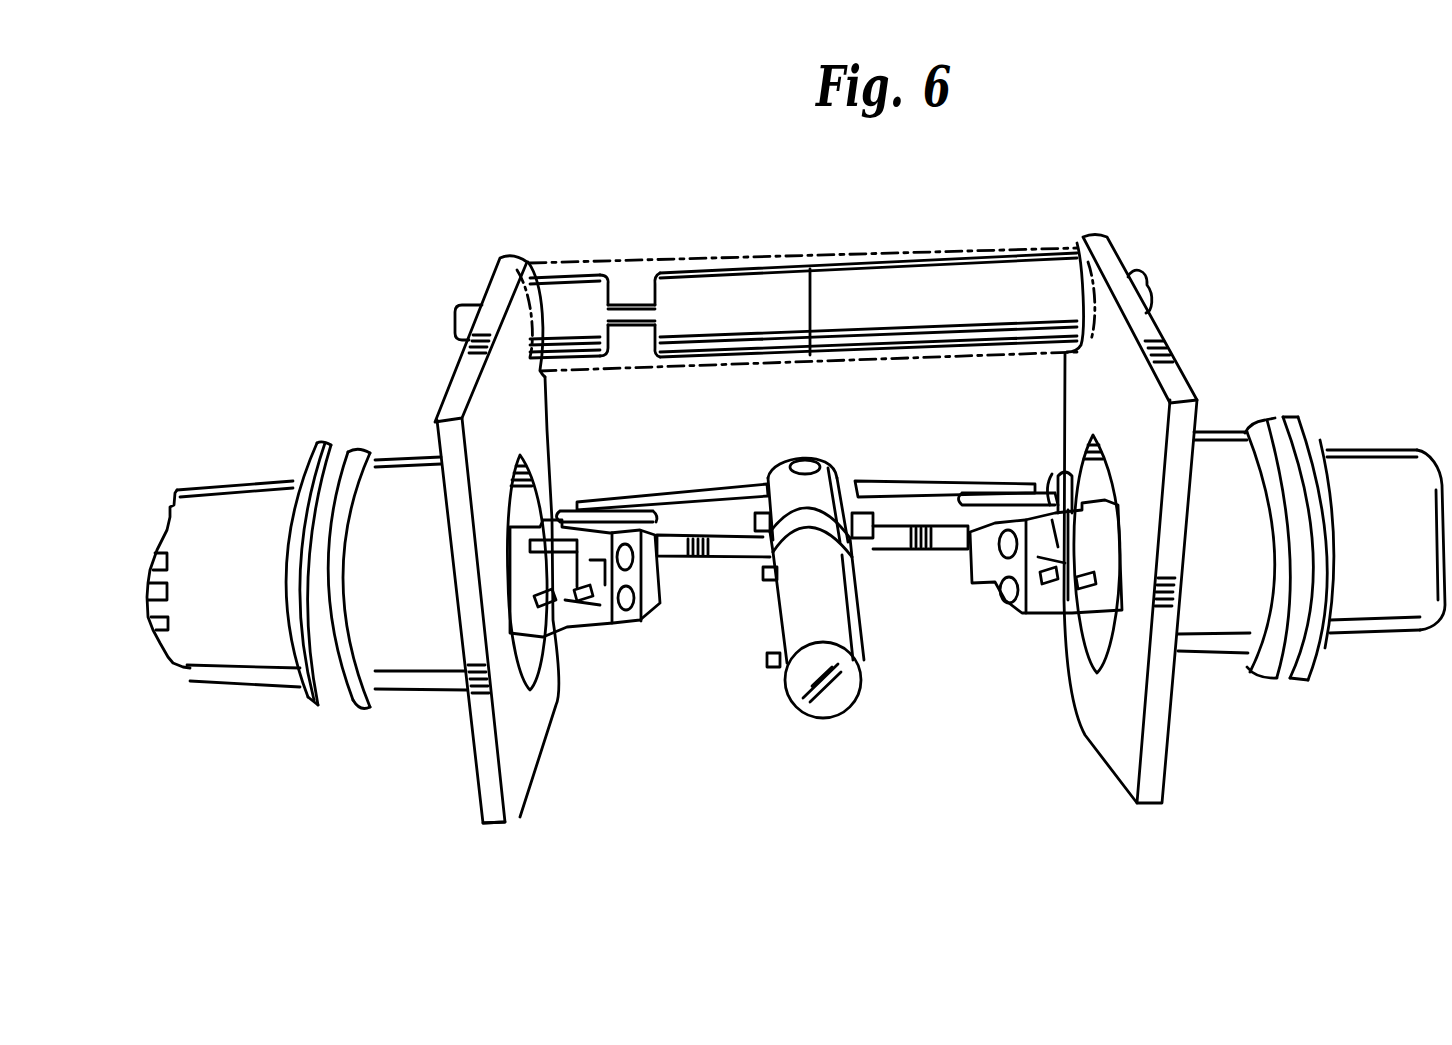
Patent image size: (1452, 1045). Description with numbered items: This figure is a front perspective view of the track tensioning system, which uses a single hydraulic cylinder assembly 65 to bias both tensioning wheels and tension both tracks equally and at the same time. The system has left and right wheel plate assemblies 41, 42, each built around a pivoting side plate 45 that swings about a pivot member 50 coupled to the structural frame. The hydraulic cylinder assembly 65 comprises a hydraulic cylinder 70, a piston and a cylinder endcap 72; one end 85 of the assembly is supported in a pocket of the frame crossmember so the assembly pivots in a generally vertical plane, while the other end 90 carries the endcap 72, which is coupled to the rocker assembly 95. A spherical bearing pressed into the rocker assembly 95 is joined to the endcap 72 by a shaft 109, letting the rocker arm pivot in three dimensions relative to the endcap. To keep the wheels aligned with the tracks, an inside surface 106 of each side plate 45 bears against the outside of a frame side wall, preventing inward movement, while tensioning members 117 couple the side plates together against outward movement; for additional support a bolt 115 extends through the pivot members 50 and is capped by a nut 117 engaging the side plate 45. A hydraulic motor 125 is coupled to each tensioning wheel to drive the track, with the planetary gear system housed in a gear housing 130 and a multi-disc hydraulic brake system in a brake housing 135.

The left wheel plate assembly 41 is at (1110, 790).
The right wheel plate assembly 42 is at (499, 828).
The pivoting side plate 45 is at (451, 383).
The pivot member 50 is at (788, 275).
The hydraulic cylinder assembly 65 is at (753, 646).
The hydraulic cylinder 70 is at (873, 645).
The cylinder endcap 72 is at (838, 470).
The end of the hydraulic cylinder assembly 85 is at (825, 718).
The other end of the hydraulic cylinder assembly 90 is at (782, 465).
The rocker assembly 95 is at (883, 478).
The inside surface of side plate 106 is at (533, 743).
The shaft 109 is at (808, 458).
The bolt 115 is at (630, 280).
The nut / tensioning member 117 is at (690, 487).
The hydraulic motor 125 is at (641, 614).
The gear housing 130 is at (263, 688).
The brake housing 135 is at (425, 703).